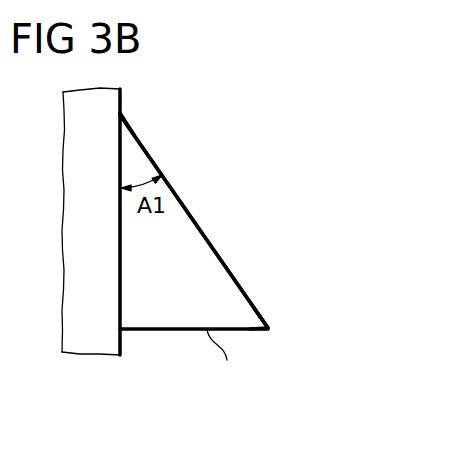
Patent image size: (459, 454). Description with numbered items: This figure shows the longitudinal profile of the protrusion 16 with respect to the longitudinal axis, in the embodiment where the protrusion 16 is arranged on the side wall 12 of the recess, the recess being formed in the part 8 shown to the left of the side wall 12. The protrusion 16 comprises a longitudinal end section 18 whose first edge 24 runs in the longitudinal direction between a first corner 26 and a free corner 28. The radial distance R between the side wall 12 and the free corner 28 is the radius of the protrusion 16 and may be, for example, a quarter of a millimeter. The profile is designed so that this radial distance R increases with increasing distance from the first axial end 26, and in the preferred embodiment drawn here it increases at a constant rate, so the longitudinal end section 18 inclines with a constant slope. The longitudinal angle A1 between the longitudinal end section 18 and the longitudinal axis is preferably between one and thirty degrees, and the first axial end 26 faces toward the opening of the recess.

The wall 8 is at (70, 148).
The side wall 12 is at (122, 339).
The protrusion 16 is at (227, 245).
The longitudinal end section 18 is at (221, 260).
The first edge 24 is at (190, 213).
The first corner 26 is at (122, 114).
The free corner 28 is at (270, 328).